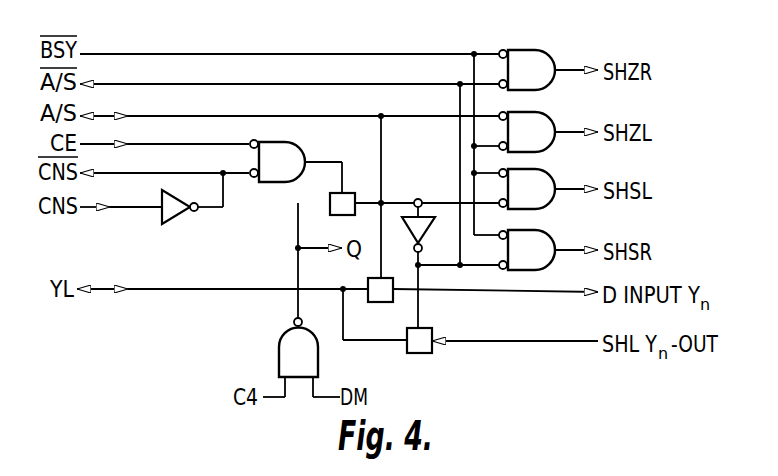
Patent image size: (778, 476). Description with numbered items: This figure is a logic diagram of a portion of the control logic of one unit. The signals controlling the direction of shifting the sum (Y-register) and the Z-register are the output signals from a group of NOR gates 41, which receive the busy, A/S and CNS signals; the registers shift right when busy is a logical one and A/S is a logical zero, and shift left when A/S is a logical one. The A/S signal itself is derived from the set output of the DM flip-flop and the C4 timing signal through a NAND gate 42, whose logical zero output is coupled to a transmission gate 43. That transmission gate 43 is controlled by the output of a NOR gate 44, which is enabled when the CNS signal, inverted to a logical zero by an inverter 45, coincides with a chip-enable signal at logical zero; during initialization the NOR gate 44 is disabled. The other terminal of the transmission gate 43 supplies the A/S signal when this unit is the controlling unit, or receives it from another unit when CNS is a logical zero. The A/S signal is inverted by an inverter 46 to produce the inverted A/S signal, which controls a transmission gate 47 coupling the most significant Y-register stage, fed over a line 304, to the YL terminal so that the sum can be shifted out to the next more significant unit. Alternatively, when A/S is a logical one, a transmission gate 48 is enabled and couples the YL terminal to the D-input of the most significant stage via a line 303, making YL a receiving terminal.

The group of NOR gates 41 is at (538, 42).
The NAND gate 42 is at (279, 355).
The transmission gate 43 is at (353, 193).
The NOR gate 44 is at (277, 184).
The inverter 45 is at (163, 221).
The inverter 46 is at (405, 217).
The transmission gate 47 is at (423, 354).
The transmission gate 48 is at (373, 302).
The line 303 is at (528, 292).
The line 304 is at (541, 341).